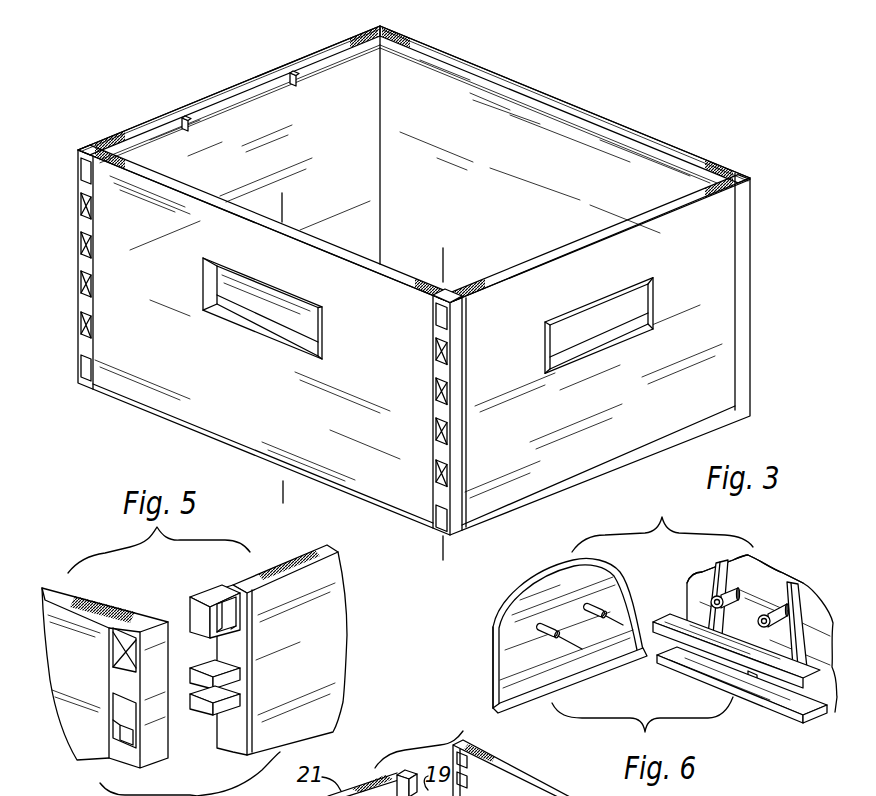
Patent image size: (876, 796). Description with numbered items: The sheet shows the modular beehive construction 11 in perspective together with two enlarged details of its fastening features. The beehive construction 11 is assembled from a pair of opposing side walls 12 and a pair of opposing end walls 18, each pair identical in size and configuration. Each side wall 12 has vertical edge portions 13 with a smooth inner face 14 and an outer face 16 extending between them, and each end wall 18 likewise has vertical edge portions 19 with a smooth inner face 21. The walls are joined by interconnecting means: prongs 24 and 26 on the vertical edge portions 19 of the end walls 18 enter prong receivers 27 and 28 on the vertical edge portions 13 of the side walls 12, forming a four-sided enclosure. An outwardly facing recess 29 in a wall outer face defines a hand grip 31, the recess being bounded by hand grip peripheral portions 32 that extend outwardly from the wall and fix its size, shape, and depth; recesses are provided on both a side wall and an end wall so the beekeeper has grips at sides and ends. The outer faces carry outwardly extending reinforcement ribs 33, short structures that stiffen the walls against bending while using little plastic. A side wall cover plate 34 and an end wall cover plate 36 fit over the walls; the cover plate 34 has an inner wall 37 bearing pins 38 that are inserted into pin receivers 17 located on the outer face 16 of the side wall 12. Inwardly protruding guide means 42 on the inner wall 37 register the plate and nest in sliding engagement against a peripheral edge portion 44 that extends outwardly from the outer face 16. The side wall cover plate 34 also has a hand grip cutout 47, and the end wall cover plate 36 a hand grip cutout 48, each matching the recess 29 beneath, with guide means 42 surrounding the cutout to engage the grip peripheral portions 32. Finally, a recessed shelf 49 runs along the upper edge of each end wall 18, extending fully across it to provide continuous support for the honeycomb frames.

In FIG. 3, the modular beehive construction 11 is at (770, 326).
In FIG. 3, the side wall 12 is at (192, 182).
In FIG. 6, the side wall 12 is at (760, 556).
In FIG. 3, the vertical edge portion 13 is at (751, 227).
In FIG. 3, the inner face 14 is at (443, 257).
In FIG. 6, the outer face 16 is at (806, 607).
In FIG. 6, the pin receiver 17 is at (711, 604).
In FIG. 3, the end wall 18 is at (543, 258).
In FIG. 5, the vertical edge portion 19 is at (237, 660).
In FIG. 3, the inner face 21 is at (253, 143).
In FIG. 5, the prong 24 is at (190, 603).
In FIG. 5, the prong 26 is at (210, 663).
In FIG. 5, the prong receiver 27 is at (113, 652).
In FIG. 5, the prong receiver 28 is at (113, 720).
In FIG. 3, the recess 29 is at (243, 292).
In FIG. 3, the hand grip 31 is at (261, 337).
In FIG. 3, the hand grip peripheral portion 32 is at (247, 318).
In FIG. 6, the reinforcement rib 33 is at (720, 557).
In FIG. 3, the side wall cover plate 34 is at (158, 382).
In FIG. 6, the side wall cover plate 34 is at (490, 662).
In FIG. 3, the end wall cover plate 36 is at (683, 410).
In FIG. 6, the inner wall 37 is at (540, 598).
In FIG. 6, the pin 38 is at (617, 566).
In FIG. 6, the guide means 42 is at (570, 683).
In FIG. 6, the peripheral edge portion 44 is at (797, 700).
In FIG. 3, the hand grip cutout 47 is at (323, 328).
In FIG. 3, the hand grip cutout 48 is at (598, 350).
In FIG. 3, the recessed shelf 49 is at (150, 137).